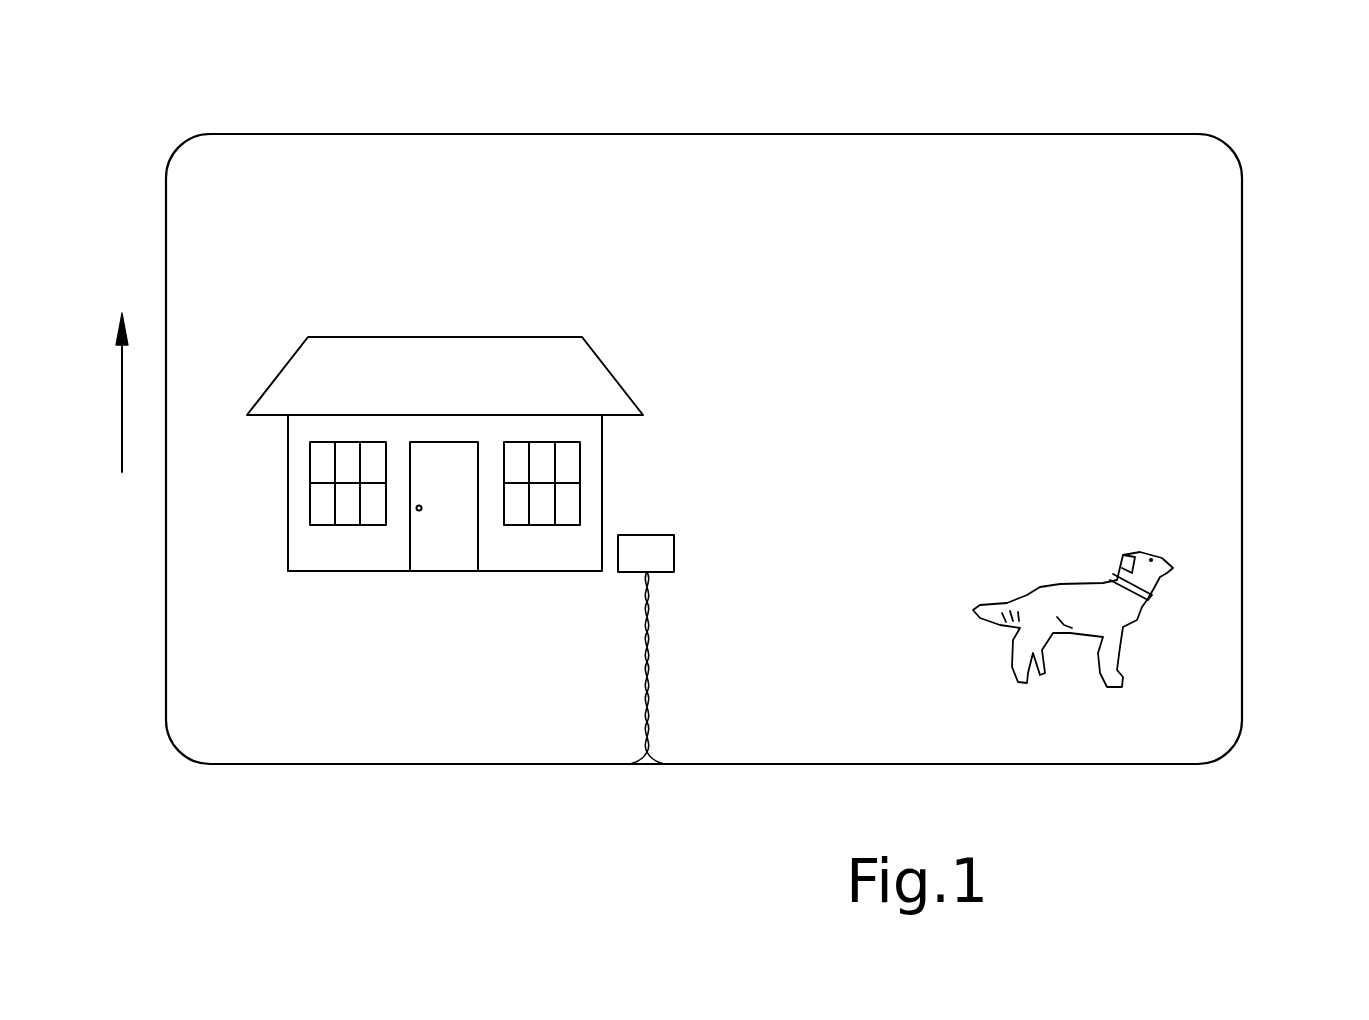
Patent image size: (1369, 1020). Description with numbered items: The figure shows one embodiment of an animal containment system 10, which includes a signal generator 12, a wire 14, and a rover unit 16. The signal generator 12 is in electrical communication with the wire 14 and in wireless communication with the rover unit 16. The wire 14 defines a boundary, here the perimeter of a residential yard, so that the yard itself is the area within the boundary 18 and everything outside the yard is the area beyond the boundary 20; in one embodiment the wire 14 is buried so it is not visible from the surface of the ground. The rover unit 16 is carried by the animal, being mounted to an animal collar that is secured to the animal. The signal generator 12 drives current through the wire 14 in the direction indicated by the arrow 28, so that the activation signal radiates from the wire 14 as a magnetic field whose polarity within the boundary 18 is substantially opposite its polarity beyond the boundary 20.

The animal containment system 10 is at (1278, 138).
The signal generator 12 is at (660, 535).
The wire 14 is at (1242, 258).
The rover unit 16 is at (1153, 600).
The area within the boundary 18 is at (973, 185).
The area beyond the boundary 20 is at (947, 109).
The arrow 28 is at (122, 398).